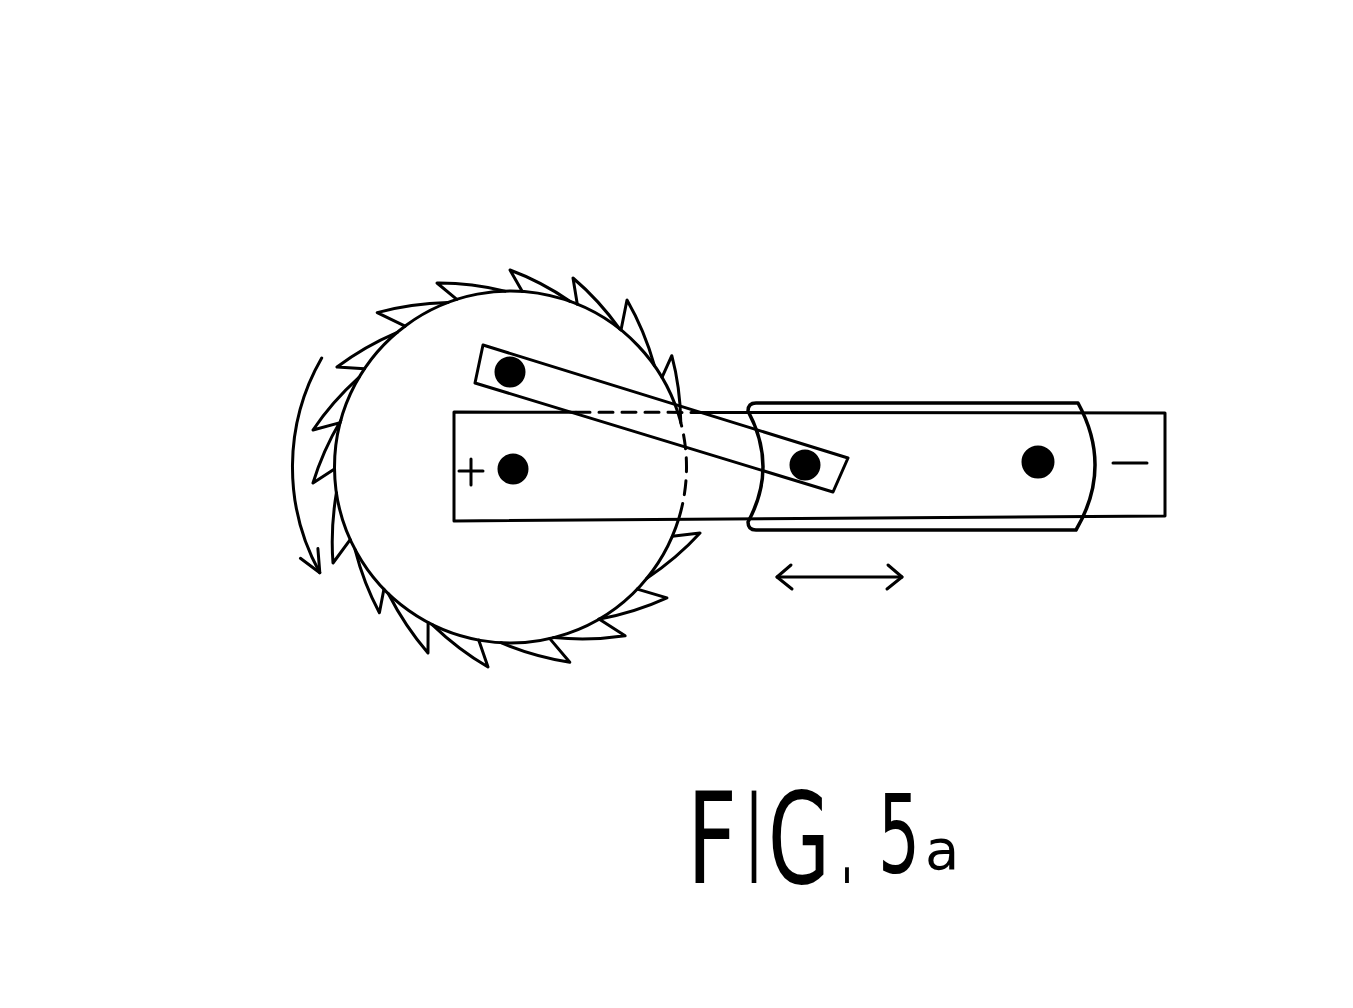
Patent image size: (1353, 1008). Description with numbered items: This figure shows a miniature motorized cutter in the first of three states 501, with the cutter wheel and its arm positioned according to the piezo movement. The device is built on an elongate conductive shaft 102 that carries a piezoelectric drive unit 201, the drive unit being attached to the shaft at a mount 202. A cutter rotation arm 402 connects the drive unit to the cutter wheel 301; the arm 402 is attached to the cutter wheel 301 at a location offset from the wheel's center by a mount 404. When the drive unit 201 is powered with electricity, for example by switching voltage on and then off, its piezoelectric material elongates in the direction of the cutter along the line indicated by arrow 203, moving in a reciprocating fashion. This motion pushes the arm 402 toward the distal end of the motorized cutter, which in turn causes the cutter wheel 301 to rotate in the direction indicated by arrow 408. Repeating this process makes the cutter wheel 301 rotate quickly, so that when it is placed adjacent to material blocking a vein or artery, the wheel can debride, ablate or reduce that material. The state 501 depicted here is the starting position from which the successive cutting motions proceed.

The first state 501 is at (905, 180).
The cutter wheel 301 is at (487, 628).
The arrow 408 is at (282, 430).
The mount 404 is at (512, 357).
The cutter rotation arm 402 is at (585, 387).
The piezoelectric drive unit 201 is at (887, 402).
The elongate conductive shaft 102 is at (1128, 428).
The mount 202 is at (1042, 468).
The arrow 203 is at (836, 586).